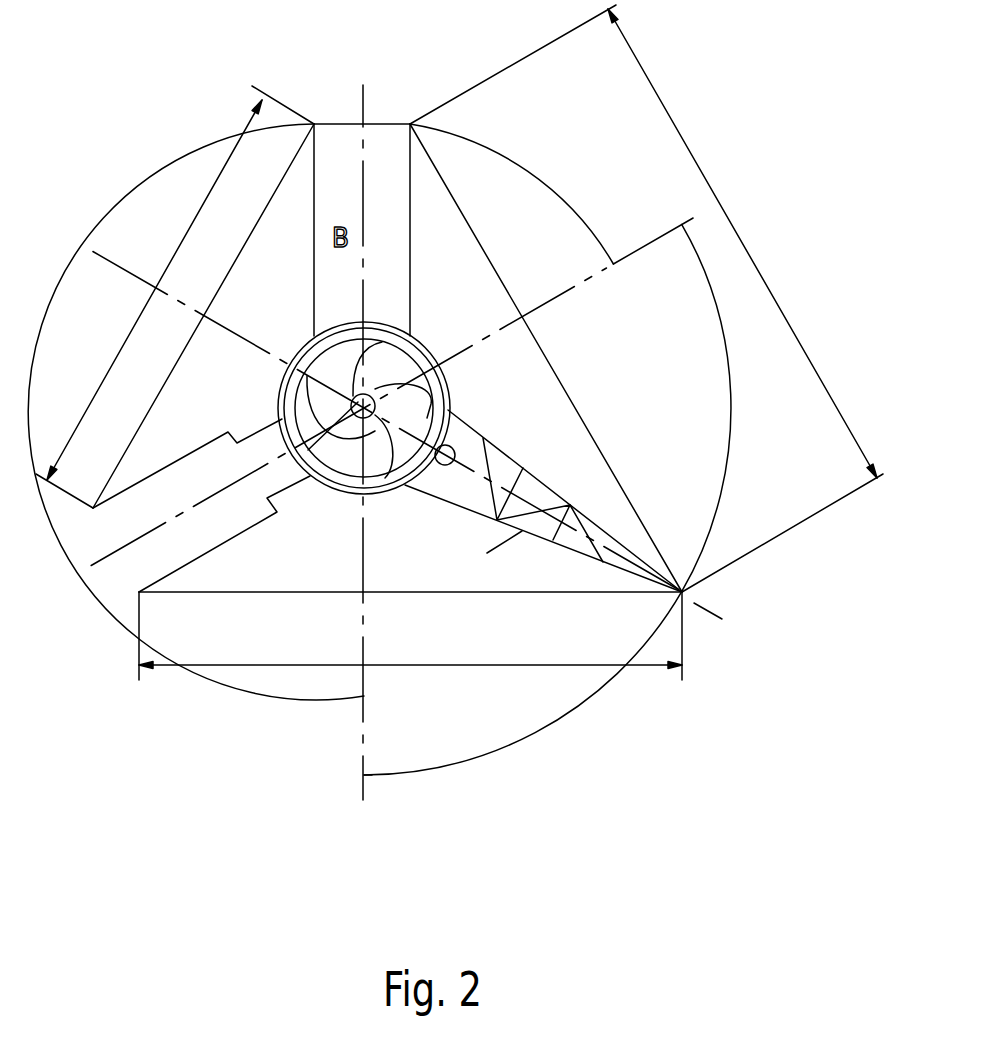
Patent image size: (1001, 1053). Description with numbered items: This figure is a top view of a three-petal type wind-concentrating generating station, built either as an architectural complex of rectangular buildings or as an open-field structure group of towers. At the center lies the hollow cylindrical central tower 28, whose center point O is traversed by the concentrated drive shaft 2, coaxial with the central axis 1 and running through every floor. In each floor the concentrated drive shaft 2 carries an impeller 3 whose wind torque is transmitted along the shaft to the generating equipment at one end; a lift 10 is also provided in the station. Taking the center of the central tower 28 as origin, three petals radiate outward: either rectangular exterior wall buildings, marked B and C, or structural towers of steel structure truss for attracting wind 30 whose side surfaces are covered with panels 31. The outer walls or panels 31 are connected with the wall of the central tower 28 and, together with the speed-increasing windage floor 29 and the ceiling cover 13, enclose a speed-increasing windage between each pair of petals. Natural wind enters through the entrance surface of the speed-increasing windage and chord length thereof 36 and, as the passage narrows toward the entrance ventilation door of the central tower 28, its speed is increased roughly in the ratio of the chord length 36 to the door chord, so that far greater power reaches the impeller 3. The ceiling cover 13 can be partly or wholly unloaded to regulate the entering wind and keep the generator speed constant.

The central axis 1 is at (366, 405).
The concentrated drive shaft 2 is at (367, 406).
The impeller 3 is at (368, 407).
The lift 10 is at (575, 547).
The ceiling cover 13 is at (265, 160).
The central tower 28 is at (366, 404).
The speed-increasing windage floor 29 is at (215, 633).
The steel structure truss for attracting wind 30 is at (585, 532).
The panel 31 is at (552, 488).
The entrance surface of the speed-increasing windage and chord length thereof 36 is at (459, 342).